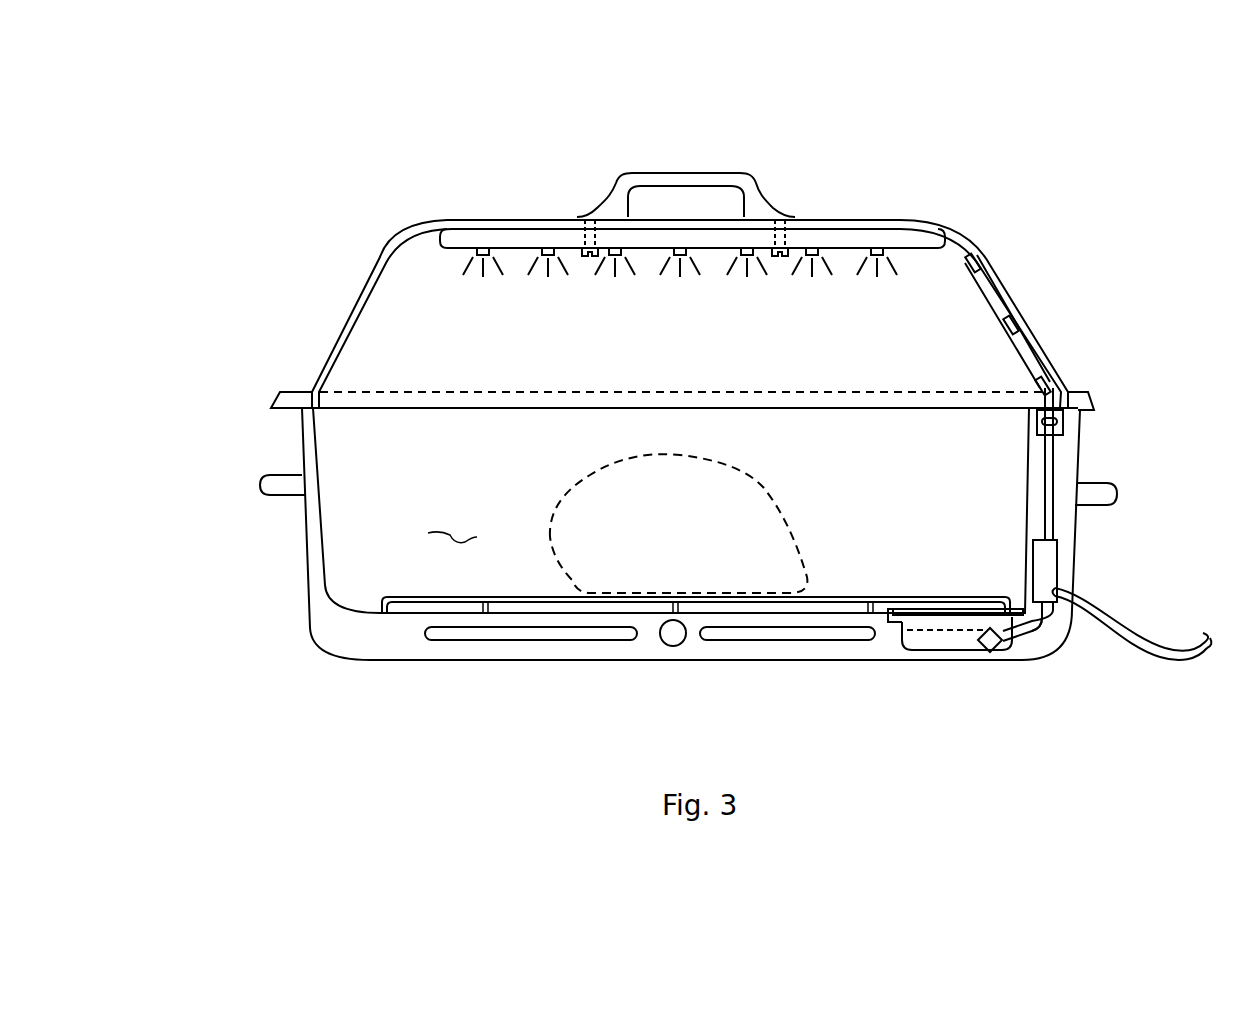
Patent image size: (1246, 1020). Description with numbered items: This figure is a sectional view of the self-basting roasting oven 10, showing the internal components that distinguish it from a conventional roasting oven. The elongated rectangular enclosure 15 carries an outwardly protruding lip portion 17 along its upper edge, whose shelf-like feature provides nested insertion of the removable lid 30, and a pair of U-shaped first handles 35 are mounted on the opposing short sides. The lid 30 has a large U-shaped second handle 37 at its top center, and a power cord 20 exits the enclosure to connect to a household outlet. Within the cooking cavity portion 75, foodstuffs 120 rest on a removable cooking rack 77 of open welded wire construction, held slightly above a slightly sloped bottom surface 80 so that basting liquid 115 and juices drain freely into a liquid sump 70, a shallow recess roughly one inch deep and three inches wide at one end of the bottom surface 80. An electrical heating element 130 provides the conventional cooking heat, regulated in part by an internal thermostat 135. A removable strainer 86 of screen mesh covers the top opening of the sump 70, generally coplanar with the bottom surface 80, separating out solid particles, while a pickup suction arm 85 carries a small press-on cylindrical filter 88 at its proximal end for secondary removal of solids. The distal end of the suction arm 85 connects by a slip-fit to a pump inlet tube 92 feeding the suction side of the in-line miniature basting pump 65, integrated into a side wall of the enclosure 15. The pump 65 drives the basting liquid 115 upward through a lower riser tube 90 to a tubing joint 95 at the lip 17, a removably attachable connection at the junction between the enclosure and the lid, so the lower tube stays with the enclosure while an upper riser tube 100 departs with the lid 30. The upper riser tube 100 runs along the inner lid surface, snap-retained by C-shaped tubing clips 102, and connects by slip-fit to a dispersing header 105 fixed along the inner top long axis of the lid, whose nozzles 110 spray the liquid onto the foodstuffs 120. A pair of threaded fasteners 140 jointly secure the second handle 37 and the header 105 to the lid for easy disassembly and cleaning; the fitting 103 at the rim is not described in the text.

The self-basting roasting oven 10 is at (265, 156).
The enclosure 15 is at (300, 442).
The lip portion 17 is at (277, 392).
The power cord 20 is at (1180, 660).
The removable lid 30 is at (378, 268).
The first handles 35 is at (267, 497).
The second handle 37 is at (713, 173).
The basting pump 65 is at (1048, 560).
The liquid sump 70 is at (935, 650).
The cooking cavity portion 75 is at (453, 537).
The removable cooking rack 77 is at (842, 598).
The bottom surface 80 is at (820, 615).
The pickup suction arm 85 is at (1000, 628).
The removable strainer 86 is at (890, 624).
The cylindrical filter 88 is at (998, 648).
The lower riser tube 90 is at (1048, 523).
The pump inlet tube 92 is at (1040, 628).
The tubing joint 95 is at (1062, 427).
The upper riser tube 100 is at (990, 283).
The tubing clips 102 is at (1037, 387).
The connector 103 is at (1041, 421).
The dispersing header 105 is at (530, 233).
The nozzles 110 is at (483, 248).
The basting liquid 115 is at (950, 632).
The foodstuffs 120 is at (653, 525).
The electrical heating element 130 is at (482, 642).
The internal thermostat 135 is at (666, 647).
The threaded fasteners 140 is at (585, 258).